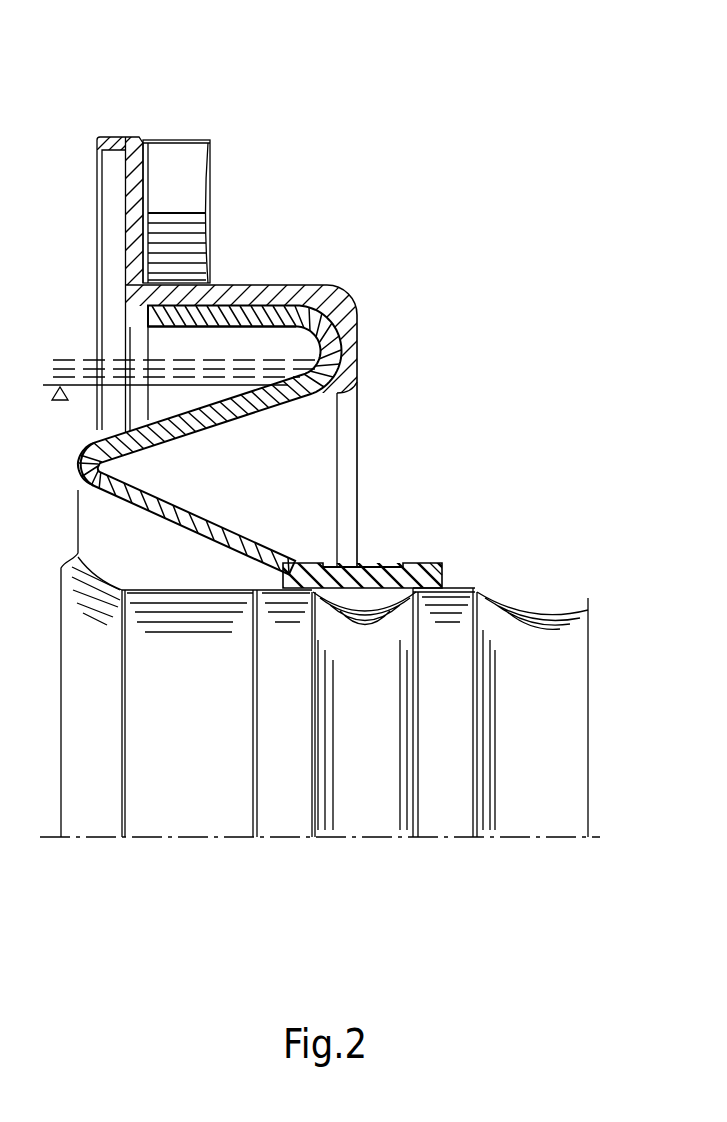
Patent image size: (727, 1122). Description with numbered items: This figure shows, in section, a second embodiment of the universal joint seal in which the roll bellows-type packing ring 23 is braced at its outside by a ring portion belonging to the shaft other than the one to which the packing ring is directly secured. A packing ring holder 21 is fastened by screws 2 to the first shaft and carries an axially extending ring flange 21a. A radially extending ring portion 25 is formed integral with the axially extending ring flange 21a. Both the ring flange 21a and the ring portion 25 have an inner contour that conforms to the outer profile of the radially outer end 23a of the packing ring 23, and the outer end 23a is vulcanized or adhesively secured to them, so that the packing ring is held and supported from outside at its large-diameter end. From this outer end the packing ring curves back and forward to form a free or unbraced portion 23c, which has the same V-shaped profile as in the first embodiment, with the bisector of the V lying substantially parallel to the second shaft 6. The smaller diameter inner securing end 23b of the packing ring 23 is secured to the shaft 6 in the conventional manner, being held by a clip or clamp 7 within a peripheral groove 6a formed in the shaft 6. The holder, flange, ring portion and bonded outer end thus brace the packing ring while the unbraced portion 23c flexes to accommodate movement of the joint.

The screws 2 is at (170, 147).
The shaft 6 is at (290, 563).
The peripheral groove 6a is at (415, 617).
The clip or clamp 7 is at (342, 567).
The packing ring holder 21 is at (100, 133).
The axially extending ring flange 21a is at (297, 292).
The packing ring 23 is at (285, 387).
The radially outer end of the packing ring 23a is at (243, 317).
The inner securing end 23b is at (412, 563).
The free or unbraced portion of the packing ring 23c is at (140, 447).
The radially extending ring portion 25 is at (347, 347).